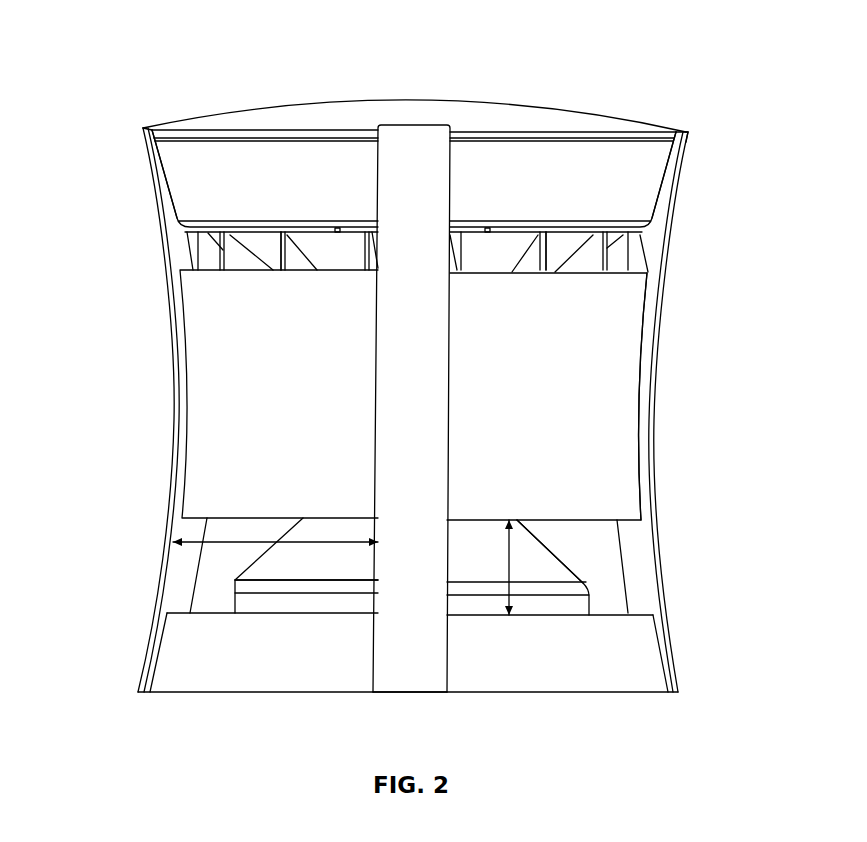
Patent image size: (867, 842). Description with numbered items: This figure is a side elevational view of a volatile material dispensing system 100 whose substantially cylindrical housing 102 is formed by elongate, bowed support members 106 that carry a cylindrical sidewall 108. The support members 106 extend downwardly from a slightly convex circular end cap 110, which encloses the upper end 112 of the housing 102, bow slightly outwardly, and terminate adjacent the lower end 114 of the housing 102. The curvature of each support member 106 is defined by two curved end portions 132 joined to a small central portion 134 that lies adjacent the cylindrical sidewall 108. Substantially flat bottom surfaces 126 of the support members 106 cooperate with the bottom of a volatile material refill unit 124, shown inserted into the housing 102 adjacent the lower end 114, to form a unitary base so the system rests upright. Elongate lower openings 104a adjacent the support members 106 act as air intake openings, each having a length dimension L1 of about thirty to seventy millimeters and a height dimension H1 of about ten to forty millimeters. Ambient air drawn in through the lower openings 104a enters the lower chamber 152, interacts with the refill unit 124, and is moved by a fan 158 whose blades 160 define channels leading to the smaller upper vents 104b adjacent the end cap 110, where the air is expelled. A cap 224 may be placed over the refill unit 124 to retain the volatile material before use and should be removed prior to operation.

The volatile material dispensing system 100 is at (108, 38).
The housing 102 is at (647, 198).
The elongate lower openings 104a is at (236, 560).
The upper vents 104b is at (268, 255).
The support members 106 is at (152, 160).
The cylindrical sidewall 108 is at (618, 390).
The end cap 110 is at (577, 122).
The upper end 112 is at (681, 132).
The lower end 114 is at (428, 692).
The volatile material refill unit 124 is at (537, 558).
The bottom surfaces 126 is at (143, 693).
The curved end portions 132 is at (152, 145).
The central portion 134 is at (183, 345).
The lower chamber 152 is at (598, 603).
The fan 158 is at (293, 253).
The blades 160 is at (292, 270).
The cap 224 is at (297, 568).
The length dimension L1 is at (178, 540).
The height dimension H1 is at (507, 557).